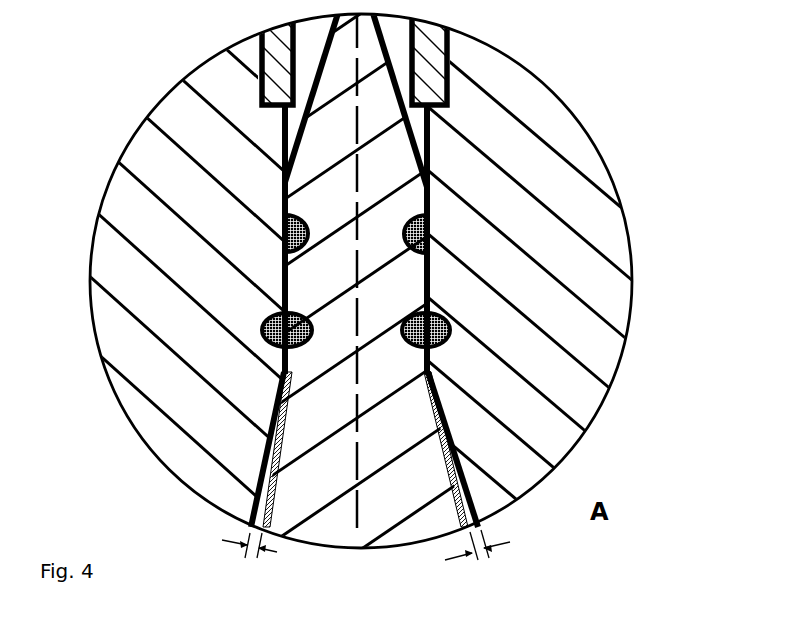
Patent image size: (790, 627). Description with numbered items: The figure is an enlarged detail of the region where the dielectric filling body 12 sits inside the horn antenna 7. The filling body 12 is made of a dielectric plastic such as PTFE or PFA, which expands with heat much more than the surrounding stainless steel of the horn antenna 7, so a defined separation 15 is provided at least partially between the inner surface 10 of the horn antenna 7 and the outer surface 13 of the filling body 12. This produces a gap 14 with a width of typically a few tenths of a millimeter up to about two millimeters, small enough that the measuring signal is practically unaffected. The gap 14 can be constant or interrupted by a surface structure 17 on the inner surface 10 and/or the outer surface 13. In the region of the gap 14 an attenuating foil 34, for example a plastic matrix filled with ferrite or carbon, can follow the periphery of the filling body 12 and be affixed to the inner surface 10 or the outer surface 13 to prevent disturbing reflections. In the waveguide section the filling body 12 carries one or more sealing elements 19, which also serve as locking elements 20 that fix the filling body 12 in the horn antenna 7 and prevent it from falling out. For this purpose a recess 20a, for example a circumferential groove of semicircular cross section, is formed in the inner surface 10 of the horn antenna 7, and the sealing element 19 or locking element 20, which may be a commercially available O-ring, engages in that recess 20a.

The horn antenna 7 is at (518, 132).
The inner surface of the horn antenna 10 is at (452, 434).
The filling body 12 is at (420, 518).
The outer surface of the filling body 13 is at (358, 490).
The gap 14 is at (240, 558).
The separation 15 is at (369, 554).
The surface structure 17 is at (358, 462).
The attenuating foil 34 is at (258, 493).
The sealing element 19 is at (305, 228).
The locking element 20 is at (490, 351).
The recess 20a is at (300, 350).